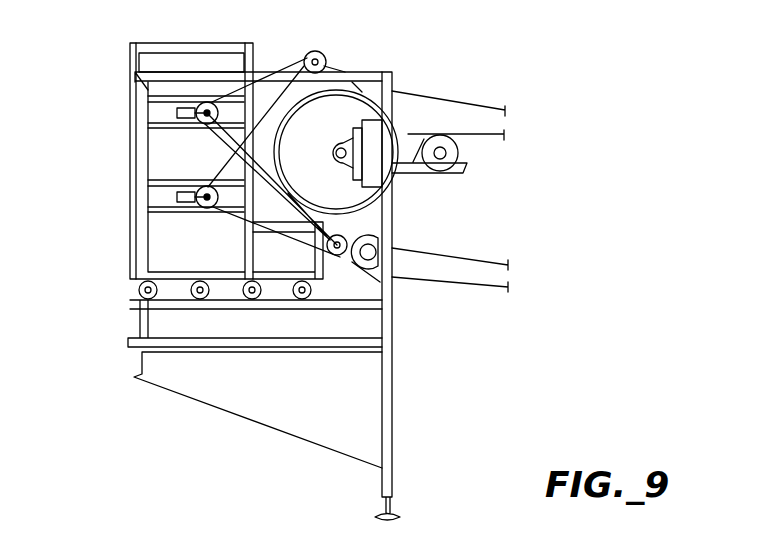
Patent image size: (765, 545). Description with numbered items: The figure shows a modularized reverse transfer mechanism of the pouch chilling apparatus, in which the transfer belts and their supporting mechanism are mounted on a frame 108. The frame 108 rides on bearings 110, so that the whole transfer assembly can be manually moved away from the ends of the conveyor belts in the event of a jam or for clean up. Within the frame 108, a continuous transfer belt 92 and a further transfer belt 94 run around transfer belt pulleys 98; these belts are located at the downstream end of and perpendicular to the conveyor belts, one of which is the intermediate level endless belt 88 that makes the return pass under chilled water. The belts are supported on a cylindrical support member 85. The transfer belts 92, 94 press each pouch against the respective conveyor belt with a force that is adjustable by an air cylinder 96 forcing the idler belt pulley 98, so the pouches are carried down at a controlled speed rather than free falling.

The cylindrical support member 85 is at (347, 100).
The intermediate level endless belt 88 is at (418, 255).
The transfer belt 92 is at (283, 63).
The transfer belt 94 is at (232, 220).
The air cylinder 96 is at (163, 107).
The transfer belt pulley 98 is at (195, 130).
The frame 108 is at (137, 262).
The bearings 110 is at (302, 300).